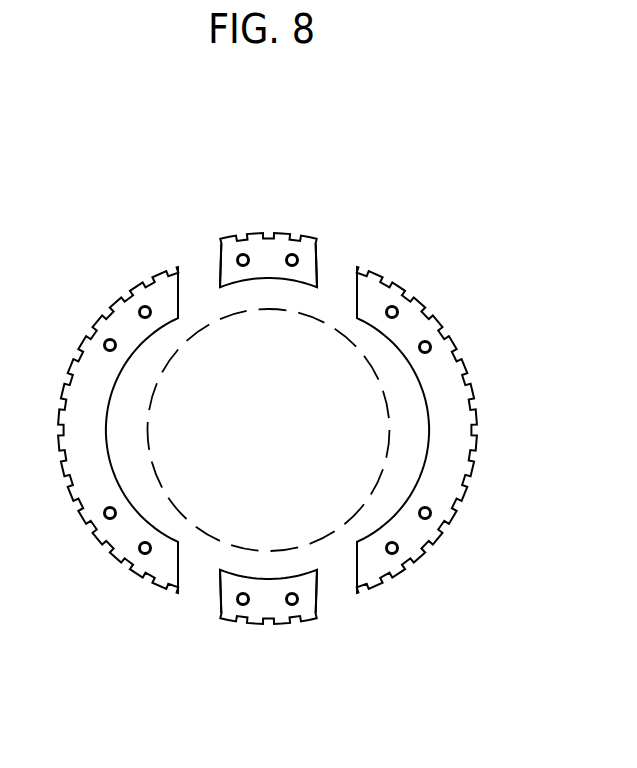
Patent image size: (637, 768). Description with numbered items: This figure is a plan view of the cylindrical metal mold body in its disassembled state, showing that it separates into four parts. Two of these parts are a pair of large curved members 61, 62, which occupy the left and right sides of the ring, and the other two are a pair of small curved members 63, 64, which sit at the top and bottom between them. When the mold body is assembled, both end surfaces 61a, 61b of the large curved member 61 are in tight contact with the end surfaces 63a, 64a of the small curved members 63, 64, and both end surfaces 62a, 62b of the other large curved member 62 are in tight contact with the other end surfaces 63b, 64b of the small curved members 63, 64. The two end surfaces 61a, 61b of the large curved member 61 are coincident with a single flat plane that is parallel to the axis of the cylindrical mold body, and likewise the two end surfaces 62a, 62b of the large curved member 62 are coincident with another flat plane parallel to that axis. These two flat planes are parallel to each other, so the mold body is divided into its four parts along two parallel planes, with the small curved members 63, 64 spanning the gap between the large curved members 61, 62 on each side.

The large curved member 61 is at (113, 298).
The end surface of large curved member 61a is at (180, 280).
The end surface of large curved member 61b is at (179, 574).
The large curved member 62 is at (458, 337).
The end surface of large curved member 62a is at (356, 280).
The end surface of large curved member 62b is at (356, 562).
The small curved member 63 is at (283, 231).
The end surface of small curved member 63a is at (217, 262).
The end surface of small curved member 63b is at (321, 262).
The small curved member 64 is at (272, 633).
The end surface of small curved member 64a is at (219, 597).
The end surface of small curved member 64b is at (318, 597).